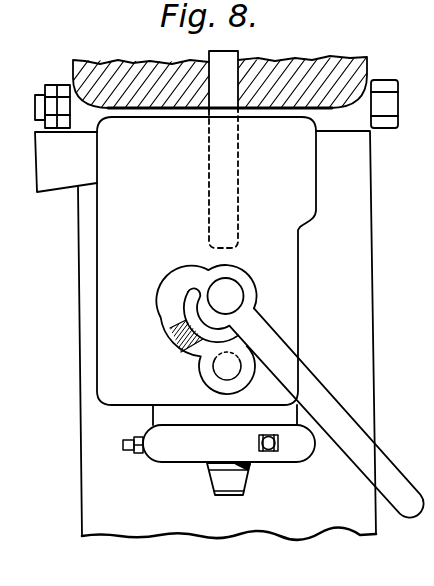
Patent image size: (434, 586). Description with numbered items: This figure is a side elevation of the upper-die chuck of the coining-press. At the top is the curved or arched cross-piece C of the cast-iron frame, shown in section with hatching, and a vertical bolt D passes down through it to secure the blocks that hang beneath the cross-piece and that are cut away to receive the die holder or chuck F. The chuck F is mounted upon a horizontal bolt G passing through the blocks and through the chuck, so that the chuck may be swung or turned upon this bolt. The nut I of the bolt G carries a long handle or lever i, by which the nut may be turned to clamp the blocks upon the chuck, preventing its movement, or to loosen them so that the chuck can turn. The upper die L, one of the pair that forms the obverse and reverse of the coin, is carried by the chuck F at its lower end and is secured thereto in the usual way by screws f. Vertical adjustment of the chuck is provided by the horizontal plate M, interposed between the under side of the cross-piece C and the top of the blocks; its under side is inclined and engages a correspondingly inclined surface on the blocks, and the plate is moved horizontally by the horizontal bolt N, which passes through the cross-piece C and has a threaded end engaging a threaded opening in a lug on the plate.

The cross-piece C is at (294, 62).
The vertical bolt D is at (238, 52).
The horizontal bolt N is at (398, 103).
The horizontal plate M is at (66, 162).
The horizontal bolt G is at (226, 296).
The nut I is at (247, 286).
The handle or lever i is at (167, 292).
The die holder or chuck F is at (229, 433).
The screws f is at (123, 446).
The die L is at (207, 479).